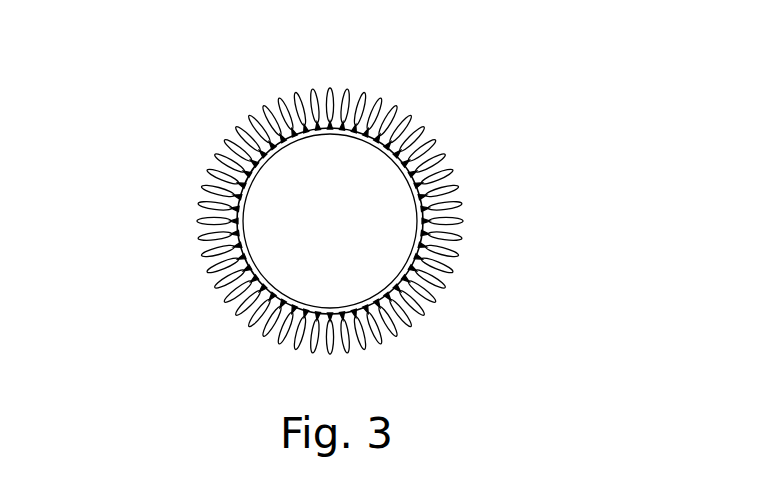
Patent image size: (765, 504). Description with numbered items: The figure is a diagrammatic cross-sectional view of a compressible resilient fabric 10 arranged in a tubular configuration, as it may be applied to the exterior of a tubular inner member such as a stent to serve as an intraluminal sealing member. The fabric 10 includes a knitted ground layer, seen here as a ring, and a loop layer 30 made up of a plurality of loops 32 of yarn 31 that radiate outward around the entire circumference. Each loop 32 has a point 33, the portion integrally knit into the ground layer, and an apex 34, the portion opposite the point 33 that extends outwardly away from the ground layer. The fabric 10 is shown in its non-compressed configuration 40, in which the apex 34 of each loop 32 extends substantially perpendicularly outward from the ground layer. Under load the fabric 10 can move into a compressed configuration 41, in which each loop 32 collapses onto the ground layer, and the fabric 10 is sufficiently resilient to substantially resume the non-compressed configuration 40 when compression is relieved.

The compressible resilient fabric 10 is at (182, 92).
The loop layer 30 is at (222, 310).
The yarn 31 is at (447, 167).
The loops 32 is at (407, 112).
The point 33 is at (242, 228).
The apex 34 is at (310, 85).
The non-compressed configuration 40 is at (470, 298).
The compressed configuration 41 is at (417, 230).